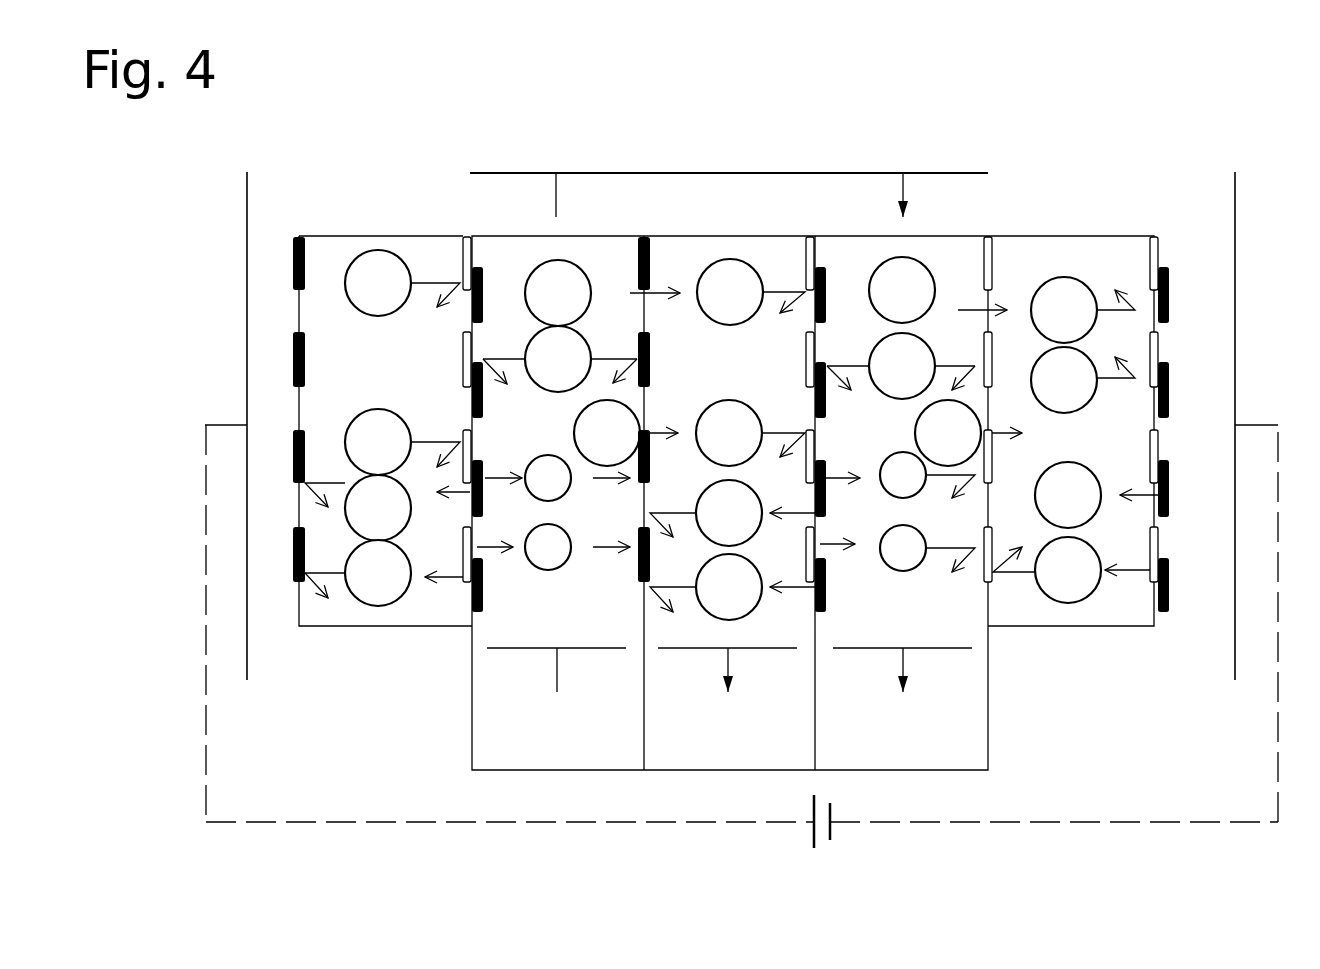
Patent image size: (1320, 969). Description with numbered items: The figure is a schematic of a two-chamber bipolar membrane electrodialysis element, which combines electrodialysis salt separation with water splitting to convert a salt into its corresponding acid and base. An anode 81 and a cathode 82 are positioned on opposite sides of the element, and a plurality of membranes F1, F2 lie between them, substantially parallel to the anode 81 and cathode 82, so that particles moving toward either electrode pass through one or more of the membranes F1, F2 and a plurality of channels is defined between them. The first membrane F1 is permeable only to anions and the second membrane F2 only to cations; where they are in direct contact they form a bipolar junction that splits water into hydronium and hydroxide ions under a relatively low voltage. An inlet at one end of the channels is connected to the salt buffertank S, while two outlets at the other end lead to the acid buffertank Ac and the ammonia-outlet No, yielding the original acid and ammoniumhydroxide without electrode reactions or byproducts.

The first membrane F1 is at (293, 238).
The second membrane F2 is at (465, 240).
The salt buffertank S is at (728, 172).
The anode 81 is at (247, 398).
The cathode 82 is at (1235, 375).
The acid buffertank Ac is at (557, 661).
The ammonia-outlet No is at (728, 661).